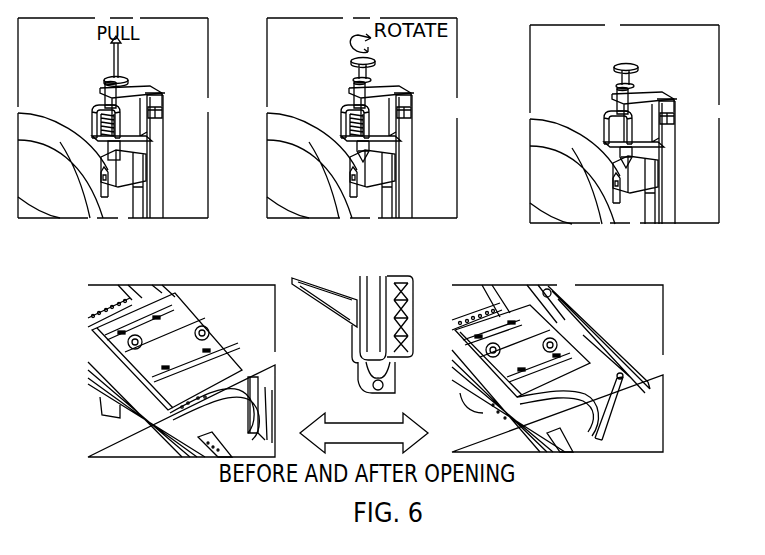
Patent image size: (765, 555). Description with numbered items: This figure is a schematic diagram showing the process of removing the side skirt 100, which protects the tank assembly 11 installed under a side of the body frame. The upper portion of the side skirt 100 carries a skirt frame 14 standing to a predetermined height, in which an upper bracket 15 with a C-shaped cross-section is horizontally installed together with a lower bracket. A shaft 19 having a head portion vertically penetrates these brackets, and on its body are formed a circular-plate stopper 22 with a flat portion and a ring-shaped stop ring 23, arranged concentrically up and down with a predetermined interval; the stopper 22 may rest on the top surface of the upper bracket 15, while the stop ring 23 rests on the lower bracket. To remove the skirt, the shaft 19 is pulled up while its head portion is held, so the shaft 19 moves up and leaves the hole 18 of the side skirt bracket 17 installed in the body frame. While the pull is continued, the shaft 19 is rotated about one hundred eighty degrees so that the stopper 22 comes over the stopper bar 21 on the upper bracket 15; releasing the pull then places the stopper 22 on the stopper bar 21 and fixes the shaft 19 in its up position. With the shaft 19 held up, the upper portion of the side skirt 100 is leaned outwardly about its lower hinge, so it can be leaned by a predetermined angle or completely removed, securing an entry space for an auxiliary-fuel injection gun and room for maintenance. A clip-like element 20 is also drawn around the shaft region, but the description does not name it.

The tank assembly 11 is at (150, 358).
The skirt frame 14 is at (152, 162).
The upper bracket 15 is at (140, 95).
The side skirt bracket 17 is at (88, 177).
The hole 18 is at (108, 158).
The shaft 19 is at (125, 78).
The U-shaped clip 20 is at (93, 110).
The stopper bar 21 is at (106, 93).
The stopper 22 is at (164, 110).
The stop ring 23 is at (98, 118).
The side skirt 100 is at (250, 378).